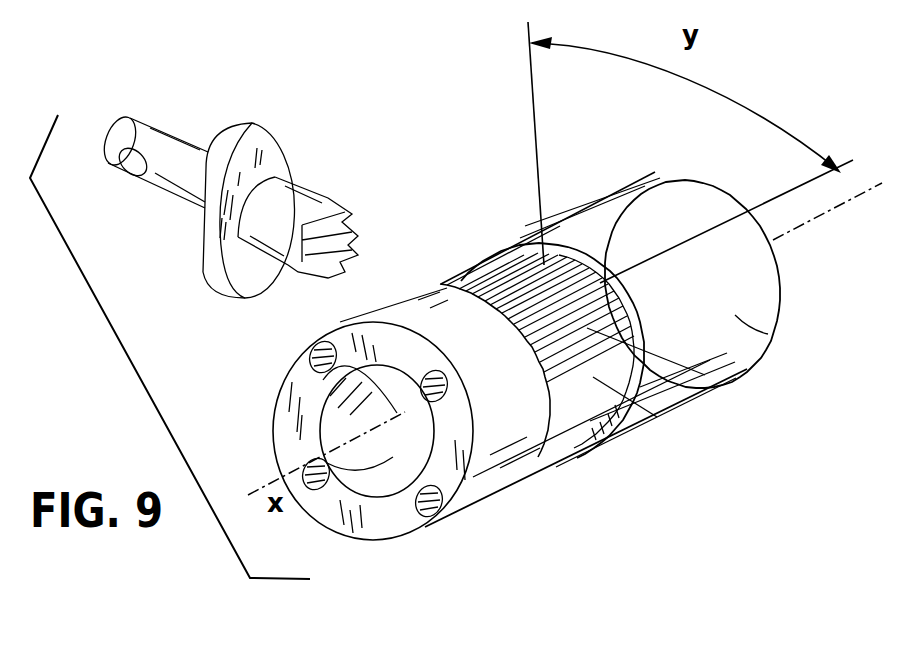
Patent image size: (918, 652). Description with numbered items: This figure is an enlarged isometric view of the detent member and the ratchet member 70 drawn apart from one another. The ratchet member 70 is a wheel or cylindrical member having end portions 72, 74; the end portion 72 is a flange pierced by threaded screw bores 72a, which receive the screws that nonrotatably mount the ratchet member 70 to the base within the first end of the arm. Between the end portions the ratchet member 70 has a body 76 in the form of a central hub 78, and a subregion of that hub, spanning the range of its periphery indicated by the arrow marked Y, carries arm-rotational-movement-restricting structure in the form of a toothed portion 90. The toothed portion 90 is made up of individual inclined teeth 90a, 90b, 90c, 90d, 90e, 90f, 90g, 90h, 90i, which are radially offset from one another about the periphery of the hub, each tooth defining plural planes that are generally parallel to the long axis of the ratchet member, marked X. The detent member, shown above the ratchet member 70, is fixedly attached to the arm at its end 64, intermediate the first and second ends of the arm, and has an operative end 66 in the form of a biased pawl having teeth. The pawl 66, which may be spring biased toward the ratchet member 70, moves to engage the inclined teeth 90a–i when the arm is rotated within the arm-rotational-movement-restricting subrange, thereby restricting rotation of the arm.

The end of detent member 64 is at (170, 148).
The operative end 66 is at (313, 188).
The ratchet member 70 is at (708, 420).
The end portion 72 is at (490, 487).
The threaded screw bores 72a is at (407, 487).
The end portion 74 is at (735, 322).
The body 76 is at (568, 430).
The central hub 78 is at (657, 417).
The toothed portion 90 is at (452, 277).
The inclined tooth 90a is at (478, 268).
The inclined tooth 90b is at (506, 262).
The inclined tooth 90c is at (538, 254).
The inclined tooth 90d is at (590, 264).
The inclined tooth 90e is at (597, 265).
The inclined tooth 90f is at (622, 285).
The inclined tooth 90g is at (645, 292).
The inclined tooth 90h is at (666, 296).
The inclined tooth 90i is at (733, 383).